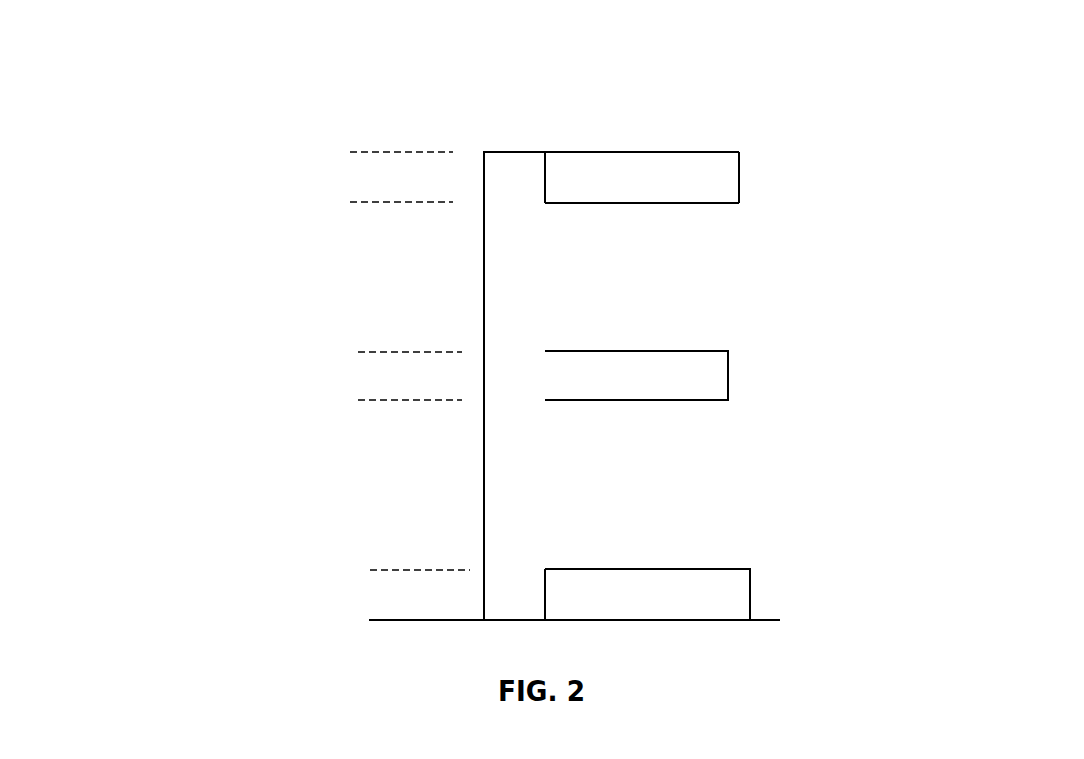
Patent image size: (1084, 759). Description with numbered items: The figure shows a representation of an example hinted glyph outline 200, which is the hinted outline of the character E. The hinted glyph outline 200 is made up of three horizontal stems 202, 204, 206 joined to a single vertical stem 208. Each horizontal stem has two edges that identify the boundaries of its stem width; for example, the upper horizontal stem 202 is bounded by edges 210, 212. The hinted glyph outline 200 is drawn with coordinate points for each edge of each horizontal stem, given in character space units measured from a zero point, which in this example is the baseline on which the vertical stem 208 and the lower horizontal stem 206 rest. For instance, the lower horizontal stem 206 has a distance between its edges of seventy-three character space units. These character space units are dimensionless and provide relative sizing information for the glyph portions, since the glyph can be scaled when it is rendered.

The hinted glyph outline 200 is at (222, 107).
The horizontal stem 202 is at (745, 178).
The horizontal stem 204 is at (733, 374).
The horizontal stem 206 is at (754, 593).
The vertical stem 208 is at (481, 297).
The edge 210 is at (658, 146).
The edge 212 is at (649, 207).